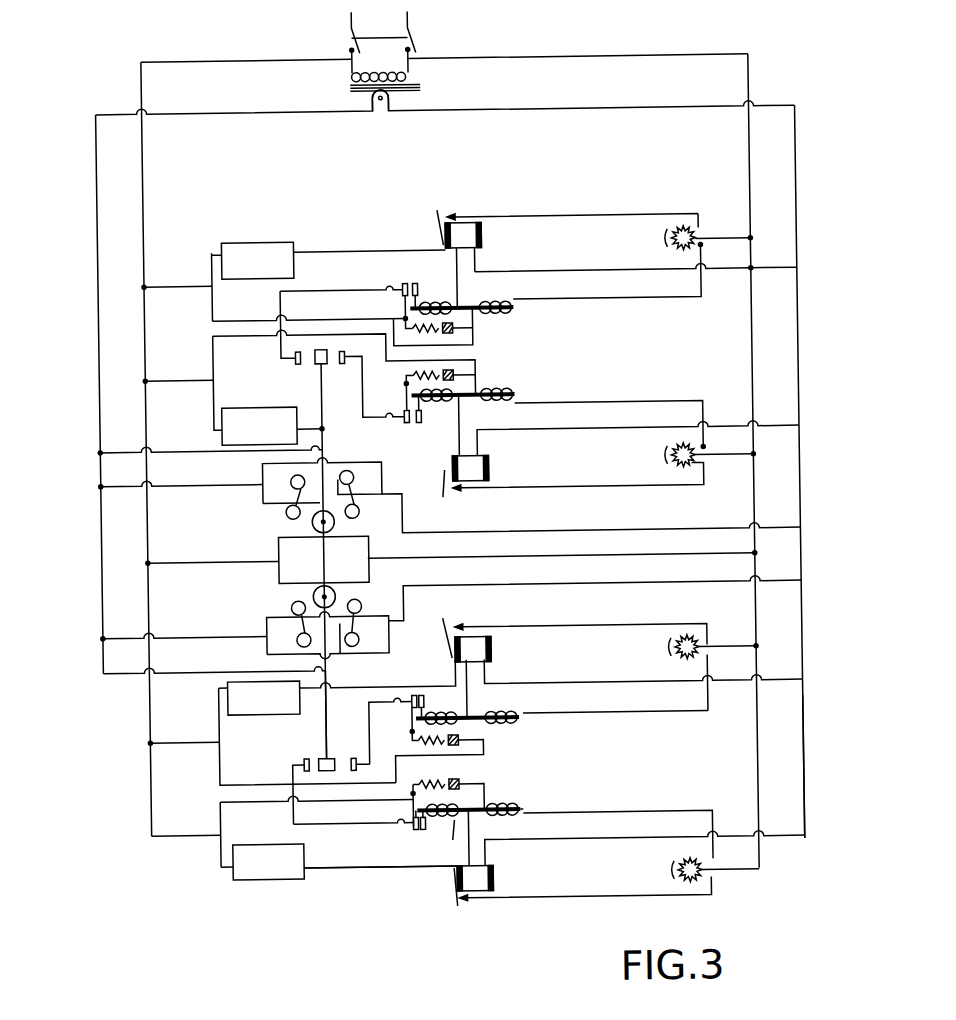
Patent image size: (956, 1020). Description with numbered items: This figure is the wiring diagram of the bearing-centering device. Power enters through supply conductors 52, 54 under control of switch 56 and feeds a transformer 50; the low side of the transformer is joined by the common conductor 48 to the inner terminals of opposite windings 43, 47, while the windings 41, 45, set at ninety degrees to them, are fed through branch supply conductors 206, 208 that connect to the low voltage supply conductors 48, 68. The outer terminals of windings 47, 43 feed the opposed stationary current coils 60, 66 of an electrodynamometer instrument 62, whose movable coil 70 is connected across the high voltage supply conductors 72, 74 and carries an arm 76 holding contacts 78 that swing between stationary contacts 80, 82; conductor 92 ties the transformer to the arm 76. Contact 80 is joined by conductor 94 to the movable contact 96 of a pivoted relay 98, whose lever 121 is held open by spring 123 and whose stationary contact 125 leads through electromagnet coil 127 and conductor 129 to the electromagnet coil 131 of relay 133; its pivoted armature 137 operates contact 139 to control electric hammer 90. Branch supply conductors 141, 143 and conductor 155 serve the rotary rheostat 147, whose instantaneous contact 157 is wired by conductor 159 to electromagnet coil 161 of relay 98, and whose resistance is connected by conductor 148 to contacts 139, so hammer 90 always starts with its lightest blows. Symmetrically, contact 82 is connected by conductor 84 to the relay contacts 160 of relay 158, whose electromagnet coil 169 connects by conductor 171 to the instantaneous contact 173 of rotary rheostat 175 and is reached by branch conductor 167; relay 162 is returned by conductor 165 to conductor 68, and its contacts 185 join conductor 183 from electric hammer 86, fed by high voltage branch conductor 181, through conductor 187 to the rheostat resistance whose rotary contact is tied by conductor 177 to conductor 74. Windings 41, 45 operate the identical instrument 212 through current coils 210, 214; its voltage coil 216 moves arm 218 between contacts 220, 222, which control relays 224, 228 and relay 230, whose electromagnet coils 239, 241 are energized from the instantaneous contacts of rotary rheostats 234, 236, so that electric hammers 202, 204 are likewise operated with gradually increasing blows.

The winding 41 is at (286, 512).
The winding 43 is at (292, 602).
The winding 45 is at (358, 514).
The winding 47 is at (358, 602).
The common conductor 48 is at (99, 228).
The transformer 50 is at (386, 116).
The supply conductor 52 is at (359, 68).
The supply conductor 54 is at (418, 70).
The switch 56 is at (426, 42).
The stationary current coil 60 is at (355, 642).
The electrodynamometer instrument 62 is at (247, 623).
The stationary current coil 66 is at (297, 643).
The low voltage supply conductor 68 is at (800, 230).
The movable coil 70 is at (331, 584).
The high voltage supply conductor 72 is at (150, 196).
The high voltage supply conductor 74 is at (752, 160).
The arm 76 is at (327, 692).
The electrical contacts 78 is at (323, 757).
The stationary contact 80 is at (306, 757).
The stationary contact 82 is at (371, 771).
The conductor 84 is at (365, 724).
The electric hammer 86 is at (243, 715).
The electric hammer 90 is at (255, 877).
The conductor 92 is at (182, 672).
The conductor 94 is at (288, 822).
The movable contact 96 is at (414, 831).
The pivoted relay 98 is at (520, 795).
The pivoted lever member 121 is at (411, 811).
The spring 123 is at (453, 781).
The stationary contact 125 is at (421, 832).
The electromagnet coil 127 is at (447, 841).
The conductor 129 is at (467, 818).
The electromagnet coil 131 is at (488, 868).
The relay 133 is at (494, 929).
The pivoted armature 137 is at (450, 889).
The contact 139 is at (452, 905).
The branch supply conductor 141 is at (215, 808).
The branch supply conductor 143 is at (778, 796).
The rotary rheostat 147 is at (665, 878).
The conductor 148 is at (635, 899).
The conductor 155 is at (218, 865).
The instantaneous contact 157 is at (710, 868).
The relay 158 is at (403, 734).
The conductor 159 is at (641, 814).
The contacts 160 is at (427, 716).
The electromagnet coil 161 is at (525, 803).
The relay 162 is at (489, 650).
The conductor 165 is at (600, 685).
The branch conductor 167 is at (232, 786).
The electromagnet coil 169 is at (505, 724).
The conductor 171 is at (620, 715).
The instantaneous contact 173 is at (707, 659).
The rotary rheostat 175 is at (660, 662).
The conductor 177 is at (727, 650).
The high voltage branch conductor 181 is at (216, 703).
The conductor 183 is at (371, 689).
The contacts 185 is at (470, 626).
The conductor 187 is at (650, 627).
The electric hammer 202 is at (247, 240).
The electric hammer 204 is at (238, 406).
The branch supply conductor 206 is at (188, 486).
The branch supply conductor 208 is at (493, 531).
The current coil 210 is at (292, 491).
The electrodynamometer instrument 212 is at (250, 477).
The current coil 214 is at (355, 478).
The rotatable voltage coil 216 is at (311, 529).
The arm 218 is at (320, 393).
The stationary contact 220 is at (489, 236).
The stationary contact 222 is at (344, 364).
The relay 224 is at (456, 289).
The relay 228 is at (456, 424).
The relay 230 is at (488, 458).
The rotary rheostat 234 is at (661, 249).
The rotary rheostat 236 is at (664, 469).
The electromagnet coil 239 is at (501, 316).
The electromagnet coil 241 is at (500, 392).